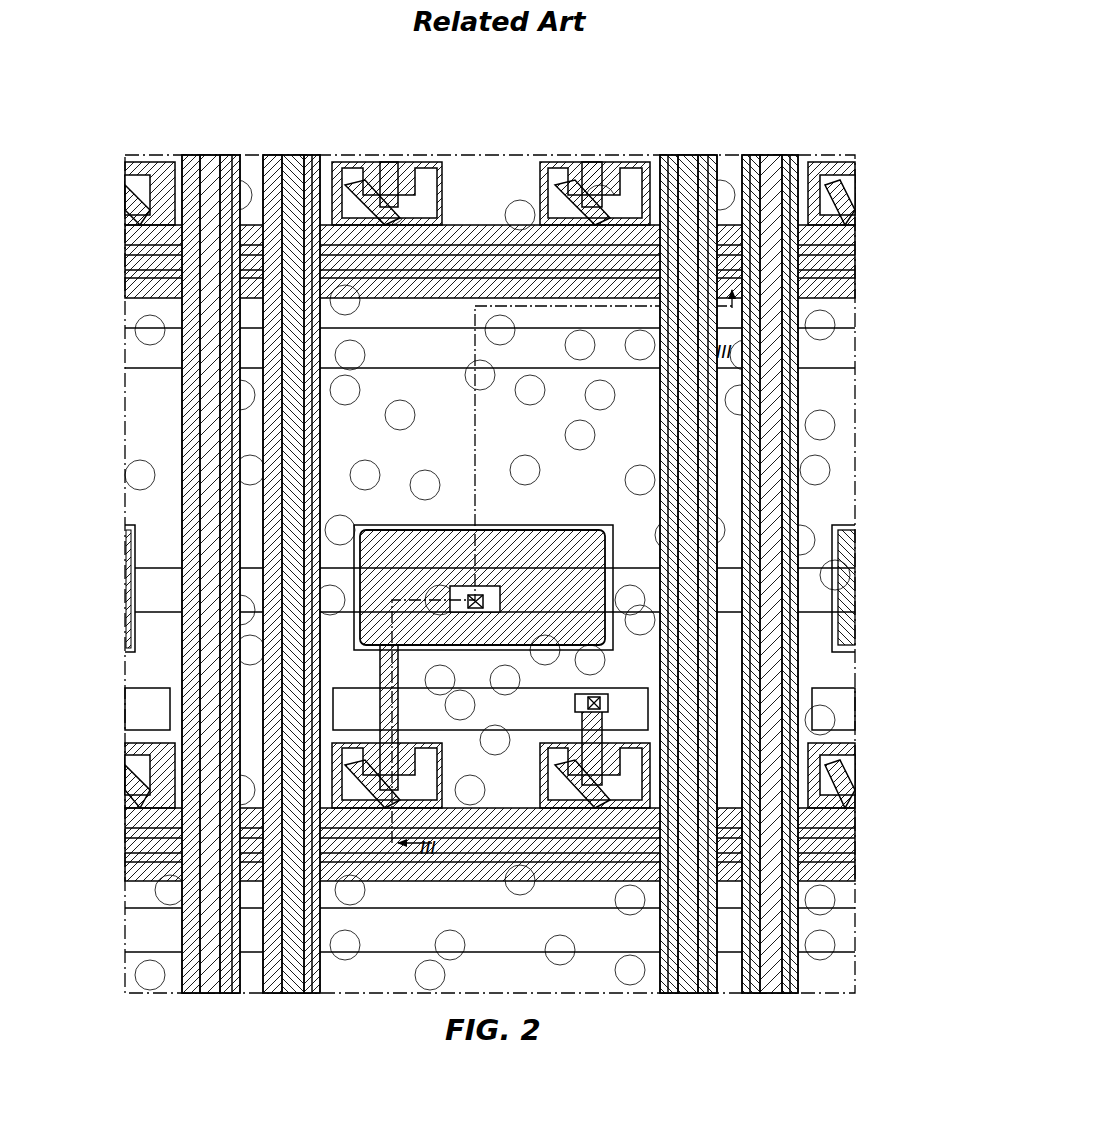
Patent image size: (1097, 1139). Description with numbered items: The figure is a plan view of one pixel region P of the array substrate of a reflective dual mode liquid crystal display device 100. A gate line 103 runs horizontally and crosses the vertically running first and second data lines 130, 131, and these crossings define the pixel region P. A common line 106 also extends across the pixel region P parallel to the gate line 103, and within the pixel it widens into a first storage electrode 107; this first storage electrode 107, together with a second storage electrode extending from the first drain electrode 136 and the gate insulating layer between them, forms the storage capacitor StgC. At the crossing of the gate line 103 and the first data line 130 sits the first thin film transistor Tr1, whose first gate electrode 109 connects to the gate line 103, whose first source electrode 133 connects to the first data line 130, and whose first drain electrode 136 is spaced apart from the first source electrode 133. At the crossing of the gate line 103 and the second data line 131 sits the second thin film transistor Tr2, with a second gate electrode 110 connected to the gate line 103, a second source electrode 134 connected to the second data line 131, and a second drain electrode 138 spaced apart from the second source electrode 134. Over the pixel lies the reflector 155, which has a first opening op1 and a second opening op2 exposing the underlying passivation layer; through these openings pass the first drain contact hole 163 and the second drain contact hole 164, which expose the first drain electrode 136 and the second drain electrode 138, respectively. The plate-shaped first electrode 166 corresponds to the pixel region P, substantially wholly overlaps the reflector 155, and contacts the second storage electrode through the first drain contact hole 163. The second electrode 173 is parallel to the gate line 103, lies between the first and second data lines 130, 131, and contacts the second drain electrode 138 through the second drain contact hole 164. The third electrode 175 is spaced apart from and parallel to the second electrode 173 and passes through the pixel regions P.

The dual mode liquid crystal display device 100 is at (808, 112).
The first data line 130 is at (298, 154).
The second data line 131 is at (690, 154).
The third electrode 175 is at (846, 358).
The pixel region P is at (345, 443).
The common line 106 is at (162, 582).
The reflector 155 is at (660, 574).
The first electrode 166 is at (662, 457).
The storage capacitor StgC is at (483, 559).
The first storage electrode 107 is at (489, 572).
The first drain contact hole 163 is at (472, 588).
The first opening op1 is at (488, 582).
The second electrode 173 is at (482, 603).
The second drain contact hole 164 is at (592, 694).
The second opening op2 is at (598, 696).
The first drain electrode 136 is at (400, 745).
The second source electrode 134 is at (560, 748).
The second drain electrode 138 is at (572, 742).
The second gate electrode 110 is at (490, 721).
The first source electrode 133 is at (447, 768).
The first gate electrode 109 is at (473, 792).
The first thin film transistor Tr1 is at (431, 825).
The second thin film transistor Tr2 is at (578, 805).
The gate line 103 is at (565, 878).